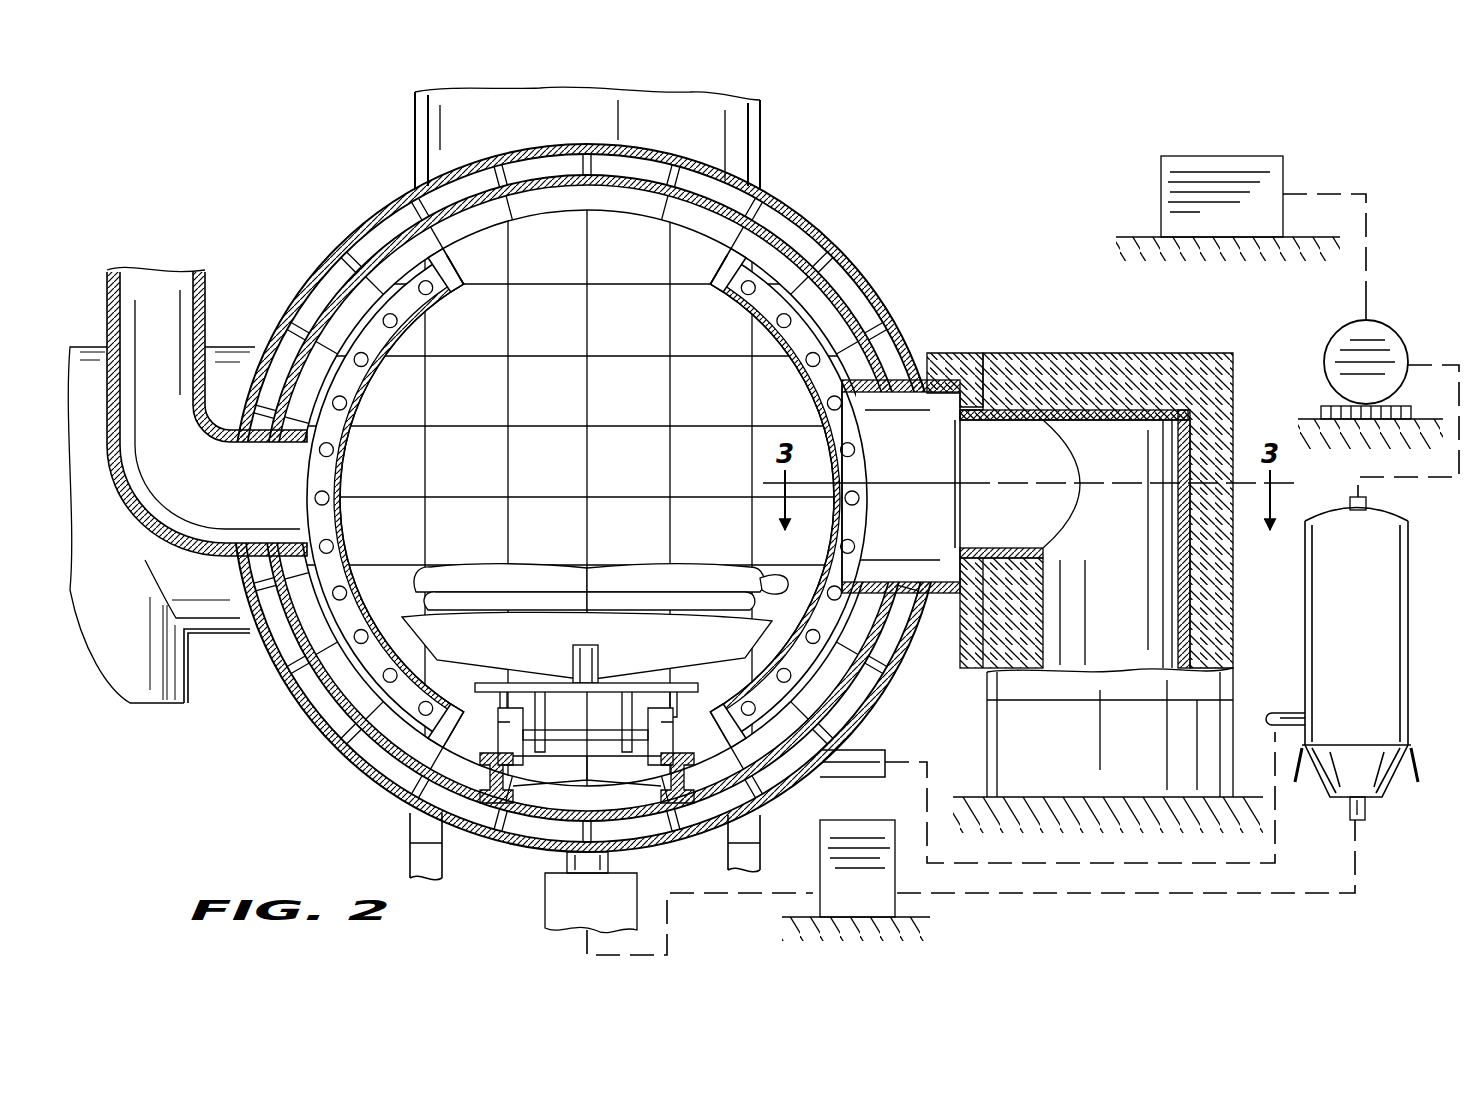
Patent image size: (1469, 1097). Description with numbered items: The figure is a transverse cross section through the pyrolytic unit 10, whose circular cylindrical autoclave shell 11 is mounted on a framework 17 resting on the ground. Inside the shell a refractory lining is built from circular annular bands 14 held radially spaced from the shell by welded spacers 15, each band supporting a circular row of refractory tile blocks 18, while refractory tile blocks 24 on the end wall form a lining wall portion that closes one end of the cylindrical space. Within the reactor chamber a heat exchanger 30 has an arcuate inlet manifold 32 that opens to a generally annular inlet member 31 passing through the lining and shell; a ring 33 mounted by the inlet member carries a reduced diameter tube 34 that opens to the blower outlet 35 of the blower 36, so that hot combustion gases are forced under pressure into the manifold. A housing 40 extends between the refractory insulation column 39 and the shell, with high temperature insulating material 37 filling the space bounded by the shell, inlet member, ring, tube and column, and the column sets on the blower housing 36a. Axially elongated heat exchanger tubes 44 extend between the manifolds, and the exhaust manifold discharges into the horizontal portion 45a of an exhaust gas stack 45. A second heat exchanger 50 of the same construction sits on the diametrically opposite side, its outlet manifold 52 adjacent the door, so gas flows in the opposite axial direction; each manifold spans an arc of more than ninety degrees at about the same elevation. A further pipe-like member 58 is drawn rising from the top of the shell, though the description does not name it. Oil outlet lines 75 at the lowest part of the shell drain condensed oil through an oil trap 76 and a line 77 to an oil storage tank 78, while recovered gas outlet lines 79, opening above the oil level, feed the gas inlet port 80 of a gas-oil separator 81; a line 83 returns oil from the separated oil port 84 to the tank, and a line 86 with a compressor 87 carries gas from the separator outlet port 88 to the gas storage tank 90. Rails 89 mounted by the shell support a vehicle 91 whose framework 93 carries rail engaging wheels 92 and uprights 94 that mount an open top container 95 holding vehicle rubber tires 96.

The pyrolytic unit 10 is at (304, 736).
The auto clave shell 11 is at (805, 210).
The circular annular bands 14 is at (853, 293).
The spacers (gussets) 15 is at (826, 262).
The framework 17 is at (410, 862).
The refractory tile blocks 18 is at (538, 203).
The refractory tile blocks 24 is at (562, 397).
The heat exchanger 30 is at (735, 320).
The inlet member 31 is at (876, 396).
The inlet manifold 32 is at (776, 353).
The ring 33 is at (952, 396).
The tube 34 is at (1020, 420).
The blower outlet 35 is at (1048, 612).
The blower 36 is at (1020, 720).
The blower housing 36a is at (1110, 778).
The high temperature insulating material 37 is at (988, 375).
The refractory insulation column 39 is at (1142, 357).
The housing 40 is at (940, 352).
The heat exchanger tubes 44 is at (345, 406).
The exhaust gas stack 45 is at (207, 300).
The horizontal portion 45a is at (262, 446).
The second heat exchanger 50 is at (385, 395).
The outlet manifold 52 is at (428, 318).
The inlet pipe 58 is at (413, 112).
The oil outlet lines 75 is at (562, 866).
The oil trap 76 is at (578, 918).
The line 77 is at (738, 895).
The oil storage tank 78 is at (866, 882).
The recovered gas outlet lines 79 is at (852, 770).
The gas inlet port 80 is at (1276, 722).
The gas-oil separator 81 is at (1398, 697).
The line 83 is at (1130, 892).
The separated oil port 84 is at (1364, 807).
The line 86 is at (1368, 296).
The compressor 87 is at (1396, 350).
The separator outlet port 88 is at (1368, 503).
The rails 89 is at (407, 815).
The gas storage tank 90 is at (1160, 175).
The vehicle 91 is at (624, 608).
The rail engaging wheels 92 is at (664, 766).
The framework 93 is at (516, 688).
The upright 94 is at (600, 664).
The open top container 95 is at (480, 643).
The vehicle rubber tires 96 is at (542, 590).